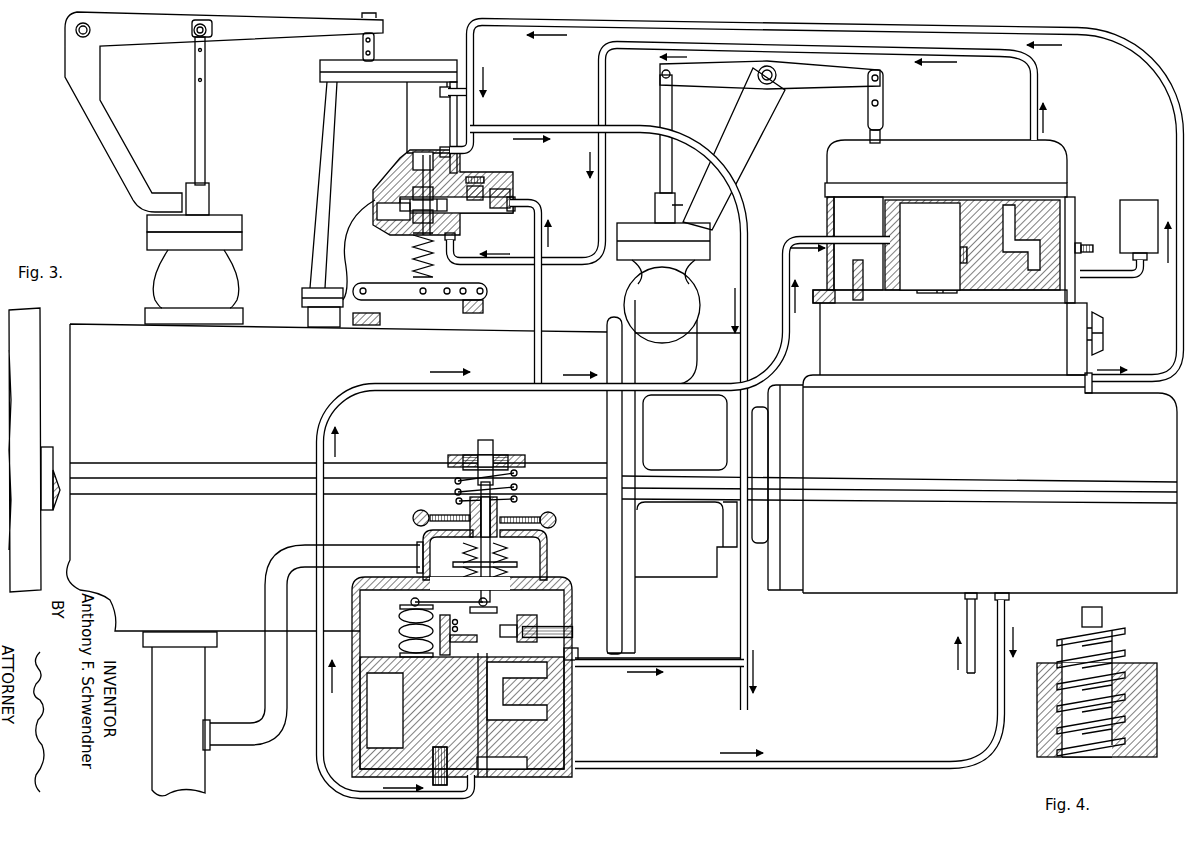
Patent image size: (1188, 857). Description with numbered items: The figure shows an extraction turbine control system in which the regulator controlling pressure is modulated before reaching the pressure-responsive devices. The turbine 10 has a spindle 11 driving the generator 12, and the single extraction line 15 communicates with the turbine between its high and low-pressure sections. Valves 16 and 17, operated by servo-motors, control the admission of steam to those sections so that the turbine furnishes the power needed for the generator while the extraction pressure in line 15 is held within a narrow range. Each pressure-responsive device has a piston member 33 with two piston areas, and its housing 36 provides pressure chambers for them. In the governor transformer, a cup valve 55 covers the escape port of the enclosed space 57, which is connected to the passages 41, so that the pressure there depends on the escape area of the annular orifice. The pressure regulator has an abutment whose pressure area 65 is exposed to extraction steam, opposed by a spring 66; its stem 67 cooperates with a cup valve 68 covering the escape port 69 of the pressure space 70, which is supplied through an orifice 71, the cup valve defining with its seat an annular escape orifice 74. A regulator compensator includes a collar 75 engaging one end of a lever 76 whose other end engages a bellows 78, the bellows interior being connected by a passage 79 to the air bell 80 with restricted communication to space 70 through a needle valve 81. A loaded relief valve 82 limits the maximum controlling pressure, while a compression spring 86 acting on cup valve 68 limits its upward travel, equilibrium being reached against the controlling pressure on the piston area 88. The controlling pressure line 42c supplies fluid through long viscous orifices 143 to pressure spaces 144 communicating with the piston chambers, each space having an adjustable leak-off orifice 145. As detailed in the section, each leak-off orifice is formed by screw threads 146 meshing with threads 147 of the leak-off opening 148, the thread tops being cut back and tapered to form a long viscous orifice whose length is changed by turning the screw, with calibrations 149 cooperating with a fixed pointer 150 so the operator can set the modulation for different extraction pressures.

In FIG. 3, the turbine 10 is at (208, 422).
In FIG. 3, the spindle 11 is at (768, 447).
In FIG. 3, the generator 12 is at (25, 318).
In FIG. 3, the single extraction line 15 is at (200, 779).
In FIG. 3, the valve 16 is at (635, 300).
In FIG. 3, the valve 17 is at (218, 290).
In FIG. 3, the piston member 33 is at (410, 213).
In FIG. 3, the housing 36 is at (373, 213).
In FIG. 3, the passages 41 is at (460, 262).
In FIG. 3, the pressure regulator controlling pressure line 42c is at (547, 206).
In FIG. 3, the cup or valve member 55 is at (1023, 253).
In FIG. 3, the enclosed space 57 is at (1030, 228).
In FIG. 3, the pressure area 65 is at (500, 558).
In FIG. 3, the spring 66 is at (455, 494).
In FIG. 3, the stem 67 is at (470, 555).
In FIG. 3, the cup or valve member 68 is at (505, 625).
In FIG. 3, the escape port 69 is at (487, 664).
In FIG. 3, the pressure space 70 is at (483, 723).
In FIG. 3, the orifice 71 is at (522, 768).
In FIG. 3, the annular escape orifice 74 is at (400, 647).
In FIG. 3, the collar 75 is at (490, 608).
In FIG. 3, the lever 76 is at (410, 600).
In FIG. 3, the bellows 78 is at (400, 614).
In FIG. 3, the passage 79 is at (417, 730).
In FIG. 3, the air bell 80 is at (368, 723).
In FIG. 3, the needle valve 81 is at (448, 768).
In FIG. 3, the loaded relief valve 82 is at (563, 655).
In FIG. 3, the compression spring 86 is at (400, 631).
In FIG. 3, the piston area 88 is at (430, 675).
In FIG. 3, the orifices 143 is at (492, 192).
In FIG. 3, the passages or spaces 144 is at (473, 208).
In FIG. 3, the adjustable orifice 145 is at (532, 173).
In FIG. 4, the adjustable orifice 145 is at (1060, 755).
In FIG. 4, the adjusting screw 146 is at (1120, 660).
In FIG. 4, the threads 147 is at (1048, 690).
In FIG. 4, the leak-off opening 148 is at (1118, 745).
In FIG. 3, the calibrations 149 is at (475, 186).
In FIG. 3, the fixed pointer 150 is at (467, 177).